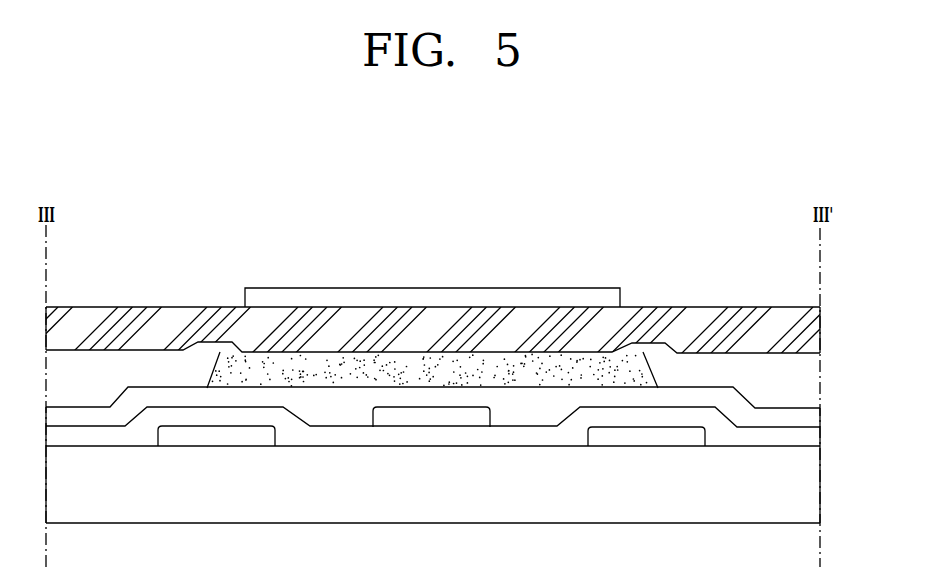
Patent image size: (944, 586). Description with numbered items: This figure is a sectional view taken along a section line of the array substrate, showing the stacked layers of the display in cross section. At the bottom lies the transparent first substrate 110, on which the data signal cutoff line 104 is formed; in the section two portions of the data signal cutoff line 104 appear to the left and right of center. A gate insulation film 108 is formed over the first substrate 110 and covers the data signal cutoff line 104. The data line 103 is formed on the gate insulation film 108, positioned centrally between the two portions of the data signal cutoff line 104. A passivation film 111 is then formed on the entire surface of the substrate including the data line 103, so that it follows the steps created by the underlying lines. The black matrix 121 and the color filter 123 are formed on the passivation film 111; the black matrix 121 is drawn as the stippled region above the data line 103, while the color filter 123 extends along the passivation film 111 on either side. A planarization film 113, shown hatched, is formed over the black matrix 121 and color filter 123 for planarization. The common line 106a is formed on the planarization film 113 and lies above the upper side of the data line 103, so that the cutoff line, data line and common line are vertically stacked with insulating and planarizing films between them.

The common line 106a is at (488, 300).
The planarization film 113 is at (805, 329).
The black matrix 121 is at (385, 367).
The color filter 123 is at (62, 370).
The passivation film 111 is at (803, 415).
The data line 103 is at (430, 418).
The data signal cutoff line 104 is at (217, 440).
The gate insulation film 108 is at (803, 443).
The transparent first substrate 110 is at (803, 495).